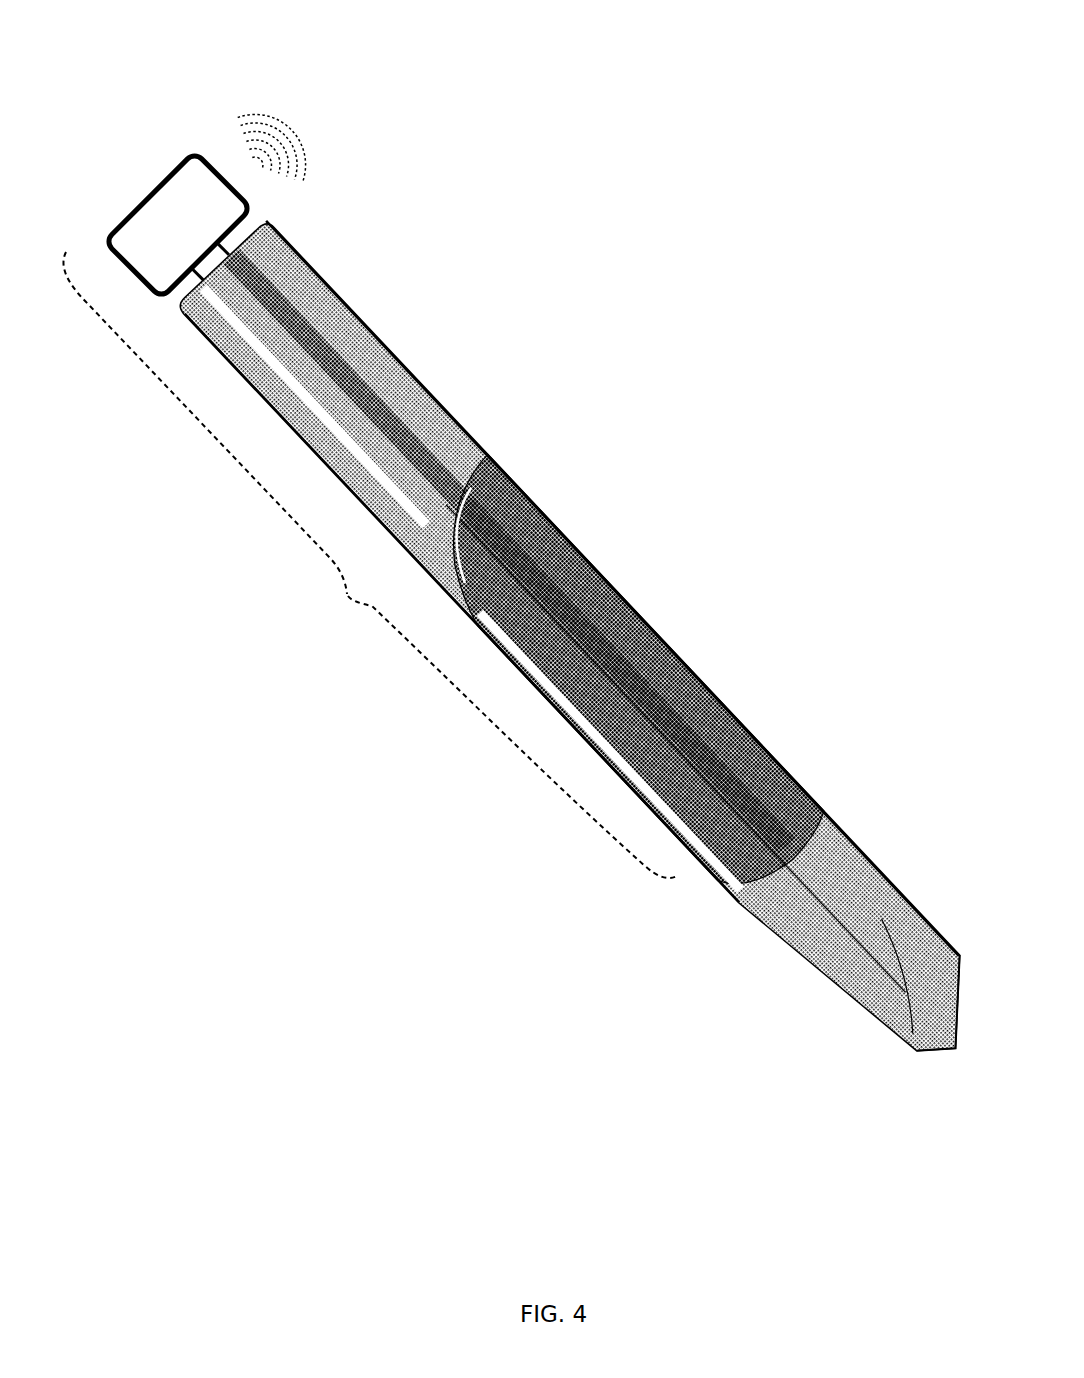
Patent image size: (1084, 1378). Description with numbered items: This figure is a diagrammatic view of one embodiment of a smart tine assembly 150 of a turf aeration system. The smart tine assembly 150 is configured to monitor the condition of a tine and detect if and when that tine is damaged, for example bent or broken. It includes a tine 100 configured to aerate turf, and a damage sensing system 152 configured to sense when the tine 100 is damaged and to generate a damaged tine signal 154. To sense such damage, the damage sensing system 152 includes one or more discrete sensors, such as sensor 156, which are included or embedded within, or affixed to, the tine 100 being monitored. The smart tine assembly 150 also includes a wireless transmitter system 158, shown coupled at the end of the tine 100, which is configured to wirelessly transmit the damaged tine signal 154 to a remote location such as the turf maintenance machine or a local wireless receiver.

The smart tine assembly 150 is at (87, 121).
The tine 100 is at (590, 654).
The damage sensing system 152 is at (370, 565).
The damaged tine signal 154 is at (327, 110).
The sensor 156 is at (572, 624).
The wireless transmitter system 158 is at (184, 231).